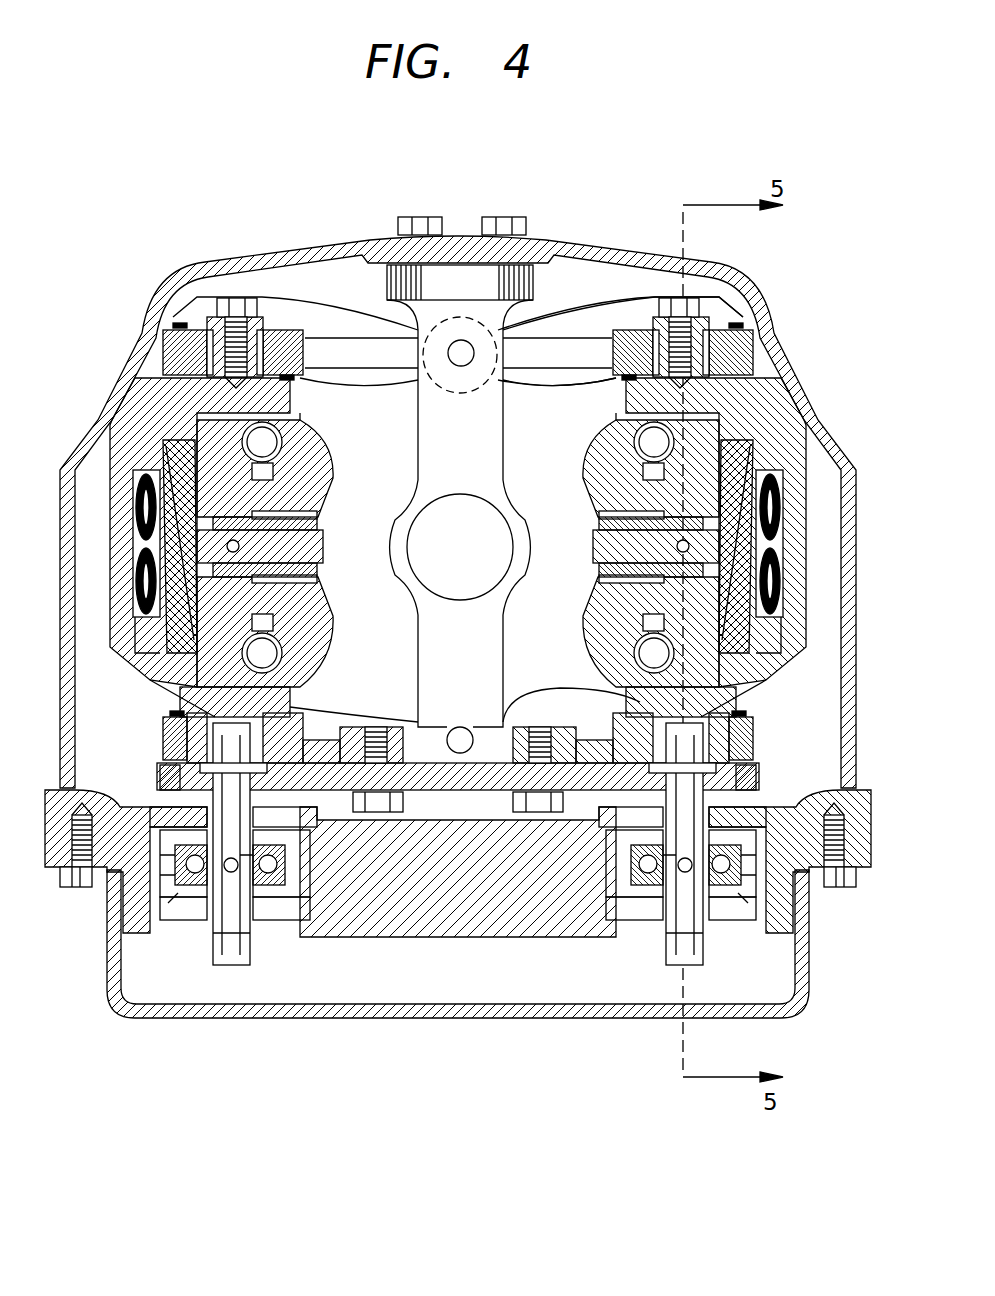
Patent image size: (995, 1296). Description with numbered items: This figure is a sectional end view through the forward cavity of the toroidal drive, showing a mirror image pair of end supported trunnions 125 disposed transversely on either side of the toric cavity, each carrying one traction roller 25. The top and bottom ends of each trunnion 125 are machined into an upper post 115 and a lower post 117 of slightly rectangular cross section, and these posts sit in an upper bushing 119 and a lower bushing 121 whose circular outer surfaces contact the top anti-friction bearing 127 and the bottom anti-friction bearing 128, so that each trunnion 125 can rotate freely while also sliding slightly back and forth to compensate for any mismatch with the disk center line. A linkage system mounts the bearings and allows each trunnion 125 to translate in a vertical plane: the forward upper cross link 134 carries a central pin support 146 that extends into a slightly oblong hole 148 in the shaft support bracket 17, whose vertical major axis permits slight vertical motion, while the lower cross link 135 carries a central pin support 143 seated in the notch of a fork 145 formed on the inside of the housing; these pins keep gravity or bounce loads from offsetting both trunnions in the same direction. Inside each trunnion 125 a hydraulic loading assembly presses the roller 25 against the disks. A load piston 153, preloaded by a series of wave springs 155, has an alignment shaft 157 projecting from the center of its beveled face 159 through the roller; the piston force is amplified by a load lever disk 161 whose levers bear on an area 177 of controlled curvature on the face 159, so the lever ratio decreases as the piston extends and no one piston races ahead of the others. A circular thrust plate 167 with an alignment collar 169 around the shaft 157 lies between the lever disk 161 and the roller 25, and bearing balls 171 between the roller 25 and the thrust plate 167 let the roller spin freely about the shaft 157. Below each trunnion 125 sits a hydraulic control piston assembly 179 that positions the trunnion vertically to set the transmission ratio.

The shaft support bracket 17 is at (470, 474).
The traction roller 25 is at (322, 414).
The upper post 115 is at (250, 330).
The lower post 117 is at (747, 700).
The upper bushing 119 is at (283, 330).
The lower bushing 121 is at (200, 762).
The trunnion 125 is at (157, 407).
The top anti-friction bearing 127 is at (197, 337).
The bottom anti-friction bearing 128 is at (185, 742).
The forward upper cross link 134 is at (552, 335).
The lower cross link 135 is at (520, 715).
The central pin support 143 is at (452, 730).
The fork 145 is at (428, 752).
The central pin support 146 is at (466, 347).
The oblong hole 148 is at (457, 362).
The load piston 153 is at (252, 578).
The wave springs 155 is at (112, 460).
The alignment shaft 157 is at (320, 570).
The piston face 159 is at (183, 602).
The load lever disk 161 is at (258, 652).
The thrust plate 167 is at (255, 463).
The alignment collar 169 is at (315, 510).
The bearing balls 171 is at (268, 443).
The area of controlled curvature 177 is at (180, 450).
The hydraulic control piston assembly 179 is at (143, 938).